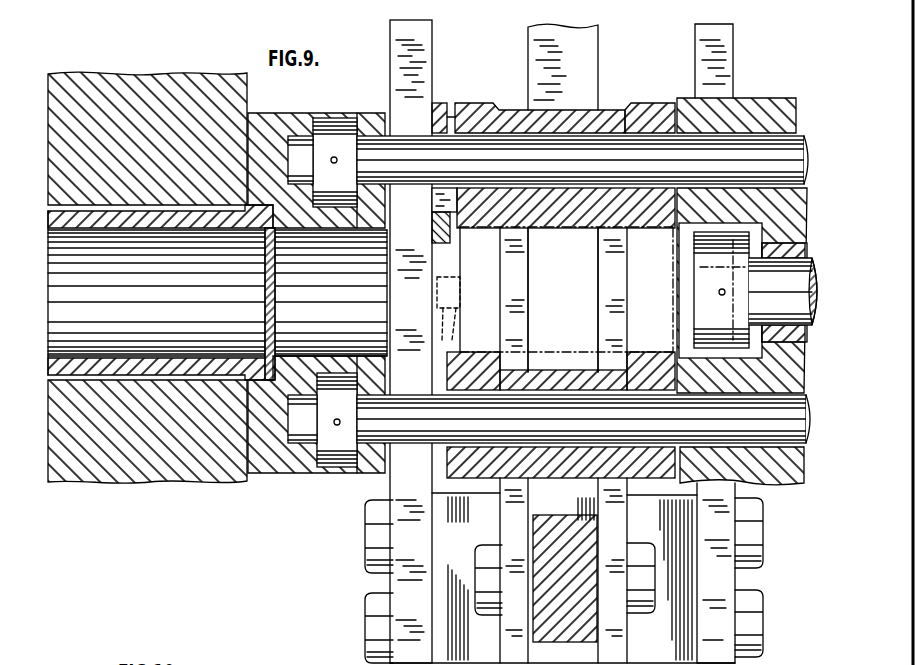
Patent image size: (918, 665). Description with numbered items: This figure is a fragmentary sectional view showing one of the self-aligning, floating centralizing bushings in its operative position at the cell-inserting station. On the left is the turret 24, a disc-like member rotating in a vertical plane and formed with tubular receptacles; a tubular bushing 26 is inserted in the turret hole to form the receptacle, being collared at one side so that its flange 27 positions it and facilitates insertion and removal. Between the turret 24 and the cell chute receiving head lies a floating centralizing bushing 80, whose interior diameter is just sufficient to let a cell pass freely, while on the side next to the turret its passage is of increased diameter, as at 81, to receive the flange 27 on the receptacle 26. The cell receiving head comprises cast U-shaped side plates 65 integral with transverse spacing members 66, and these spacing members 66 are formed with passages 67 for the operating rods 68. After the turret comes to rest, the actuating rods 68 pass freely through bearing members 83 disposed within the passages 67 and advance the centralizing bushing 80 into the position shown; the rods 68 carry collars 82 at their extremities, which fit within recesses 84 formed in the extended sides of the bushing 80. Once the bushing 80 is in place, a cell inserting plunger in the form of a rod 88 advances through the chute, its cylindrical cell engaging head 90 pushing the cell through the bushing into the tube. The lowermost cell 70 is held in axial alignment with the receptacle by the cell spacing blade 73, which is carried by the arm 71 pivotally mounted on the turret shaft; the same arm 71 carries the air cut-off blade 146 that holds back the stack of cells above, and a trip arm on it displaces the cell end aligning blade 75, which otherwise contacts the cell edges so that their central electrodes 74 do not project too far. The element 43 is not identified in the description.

The turret 24 is at (143, 467).
The receptacle bushing 26 is at (190, 363).
The shaft 43 is at (167, 355).
The flange 27 is at (287, 362).
The increased diameter passage portion 81 is at (264, 357).
The floating centralizing bushing 80 is at (278, 473).
The collar 82 is at (323, 137).
The recess 84 is at (351, 112).
The actuating rod 68 is at (503, 156).
The side plate 65 is at (473, 110).
The passage 67 is at (609, 133).
The blade 146 is at (543, 68).
The central electrode 74 is at (447, 308).
The cell end aligning blade 75 is at (445, 242).
The bearing member 83 is at (473, 230).
The cell spacing blade 73 is at (613, 500).
The transverse spacing member 66 is at (587, 233).
The lowermost cell 70 is at (540, 352).
The cell engaging head 90 is at (714, 250).
The cell inserting plunger rod 88 is at (798, 287).
The arm 71 is at (567, 615).